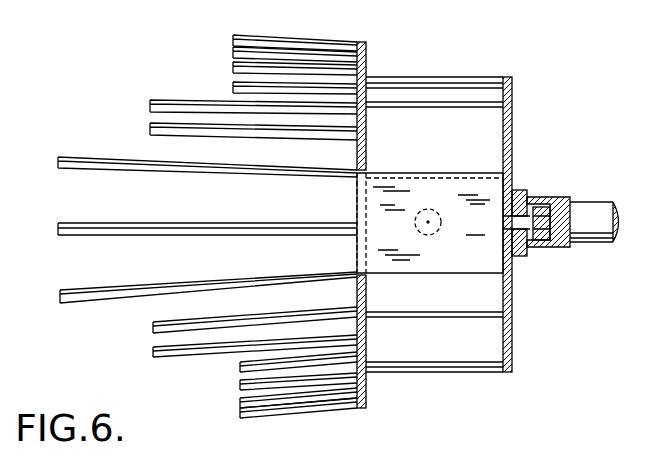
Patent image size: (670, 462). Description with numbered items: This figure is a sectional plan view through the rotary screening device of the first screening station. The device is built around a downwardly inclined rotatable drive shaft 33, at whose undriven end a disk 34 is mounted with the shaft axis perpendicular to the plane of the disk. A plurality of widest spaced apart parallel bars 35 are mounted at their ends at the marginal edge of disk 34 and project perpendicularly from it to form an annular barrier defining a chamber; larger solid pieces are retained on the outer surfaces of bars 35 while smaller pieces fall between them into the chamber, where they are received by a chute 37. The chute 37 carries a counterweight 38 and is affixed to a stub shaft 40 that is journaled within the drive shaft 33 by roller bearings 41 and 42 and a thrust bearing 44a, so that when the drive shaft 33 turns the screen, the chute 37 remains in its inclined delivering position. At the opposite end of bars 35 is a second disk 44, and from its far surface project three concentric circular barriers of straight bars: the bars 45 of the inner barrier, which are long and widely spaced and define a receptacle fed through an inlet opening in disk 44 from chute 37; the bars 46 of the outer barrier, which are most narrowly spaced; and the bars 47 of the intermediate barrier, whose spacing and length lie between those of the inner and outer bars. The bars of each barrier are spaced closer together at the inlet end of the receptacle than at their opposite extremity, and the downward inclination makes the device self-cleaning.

The drive shaft 33 is at (600, 224).
The disk 34 is at (512, 127).
The widest spaced apart parallel bars 35 is at (443, 102).
The chute 37 is at (450, 172).
The counterweight 38 is at (440, 229).
The stub shaft 40 is at (507, 220).
The roller bearing 41 is at (551, 200).
The roller bearing 42 is at (547, 241).
The disk 44 is at (364, 125).
The thrust bearing 44a is at (530, 193).
The bars of the inner barrier 45 is at (224, 176).
The bars of the outer barrier 46 is at (233, 66).
The bars of the intermediate barrier 47 is at (150, 128).